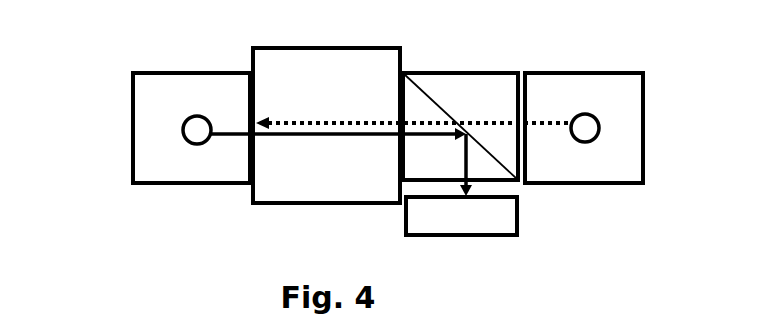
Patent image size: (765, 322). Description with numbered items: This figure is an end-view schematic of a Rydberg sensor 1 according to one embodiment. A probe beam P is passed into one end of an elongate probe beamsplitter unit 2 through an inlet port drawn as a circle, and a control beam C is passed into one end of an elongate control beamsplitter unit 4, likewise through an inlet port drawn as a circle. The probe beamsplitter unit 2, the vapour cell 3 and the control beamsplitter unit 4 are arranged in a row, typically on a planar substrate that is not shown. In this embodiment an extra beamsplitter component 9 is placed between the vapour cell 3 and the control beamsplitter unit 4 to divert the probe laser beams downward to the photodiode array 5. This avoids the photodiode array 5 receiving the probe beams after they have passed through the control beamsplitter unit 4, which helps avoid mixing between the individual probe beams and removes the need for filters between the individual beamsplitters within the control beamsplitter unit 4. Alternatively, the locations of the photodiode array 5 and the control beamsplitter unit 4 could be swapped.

The Rydberg sensor 1 is at (348, 93).
The probe beamsplitter unit 2 is at (191, 106).
The vapour cell 3 is at (326, 105).
The control beamsplitter unit 4 is at (584, 105).
The photodiode array 5 is at (461, 237).
The extra beamsplitter component 9 is at (460, 104).
The probe beam P is at (186, 133).
The control beam C is at (580, 133).